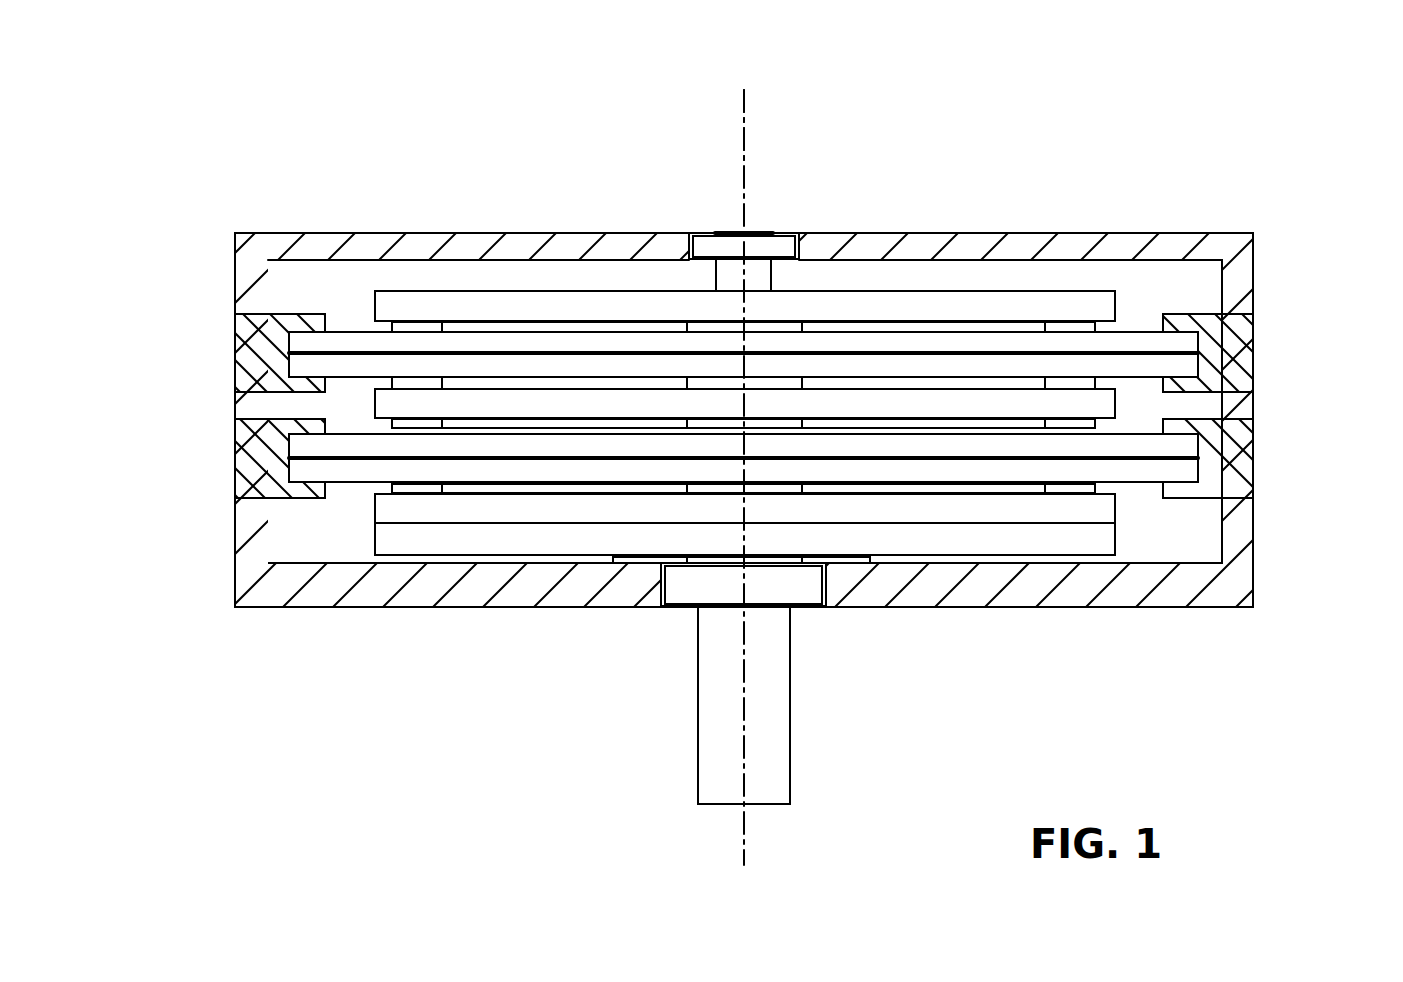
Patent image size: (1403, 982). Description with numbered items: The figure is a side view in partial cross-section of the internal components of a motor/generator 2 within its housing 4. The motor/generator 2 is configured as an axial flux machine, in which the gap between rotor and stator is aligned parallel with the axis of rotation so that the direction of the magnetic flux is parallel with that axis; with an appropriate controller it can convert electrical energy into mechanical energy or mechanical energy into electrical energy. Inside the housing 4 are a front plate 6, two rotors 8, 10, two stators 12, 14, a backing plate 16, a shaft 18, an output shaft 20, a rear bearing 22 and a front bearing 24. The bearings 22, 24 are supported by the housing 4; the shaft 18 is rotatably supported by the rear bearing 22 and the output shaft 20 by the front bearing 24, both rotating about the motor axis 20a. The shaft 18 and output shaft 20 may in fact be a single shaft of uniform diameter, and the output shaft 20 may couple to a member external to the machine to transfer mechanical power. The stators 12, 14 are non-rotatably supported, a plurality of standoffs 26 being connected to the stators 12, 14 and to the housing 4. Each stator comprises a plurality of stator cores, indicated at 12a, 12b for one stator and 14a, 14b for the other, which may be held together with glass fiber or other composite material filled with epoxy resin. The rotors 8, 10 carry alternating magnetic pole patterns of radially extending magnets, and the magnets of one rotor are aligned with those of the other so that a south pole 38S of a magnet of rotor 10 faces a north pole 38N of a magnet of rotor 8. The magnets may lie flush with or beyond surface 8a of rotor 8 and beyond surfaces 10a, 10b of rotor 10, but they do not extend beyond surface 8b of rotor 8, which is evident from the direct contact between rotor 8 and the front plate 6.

The motor/generator 2 is at (1139, 123).
The housing 4 is at (1230, 237).
The front plate 6 is at (395, 538).
The rotor 8 is at (395, 510).
The surface of rotor 8 8a is at (383, 500).
The surface of rotor 8 8b is at (460, 525).
The rotor 10 is at (383, 408).
The surface of rotor 10 10a is at (383, 386).
The surface of rotor 10 10b is at (383, 420).
The stator 12 is at (1133, 482).
The stator core 12a is at (1195, 472).
The stator core 12b is at (1193, 445).
The stator 14 is at (1135, 332).
The stator core 14a is at (1193, 366).
The stator core 14b is at (1193, 340).
The backing plate 16 is at (437, 307).
The shaft 18 is at (760, 272).
The output shaft 20 is at (790, 731).
The motor axis 20a is at (744, 140).
The rear bearing 22 is at (786, 233).
The front bearing 24 is at (808, 598).
The standoff 26 is at (240, 345).
The north pole of magnet 38 38N is at (1073, 383).
The south pole of magnet 38 38S is at (1175, 424).